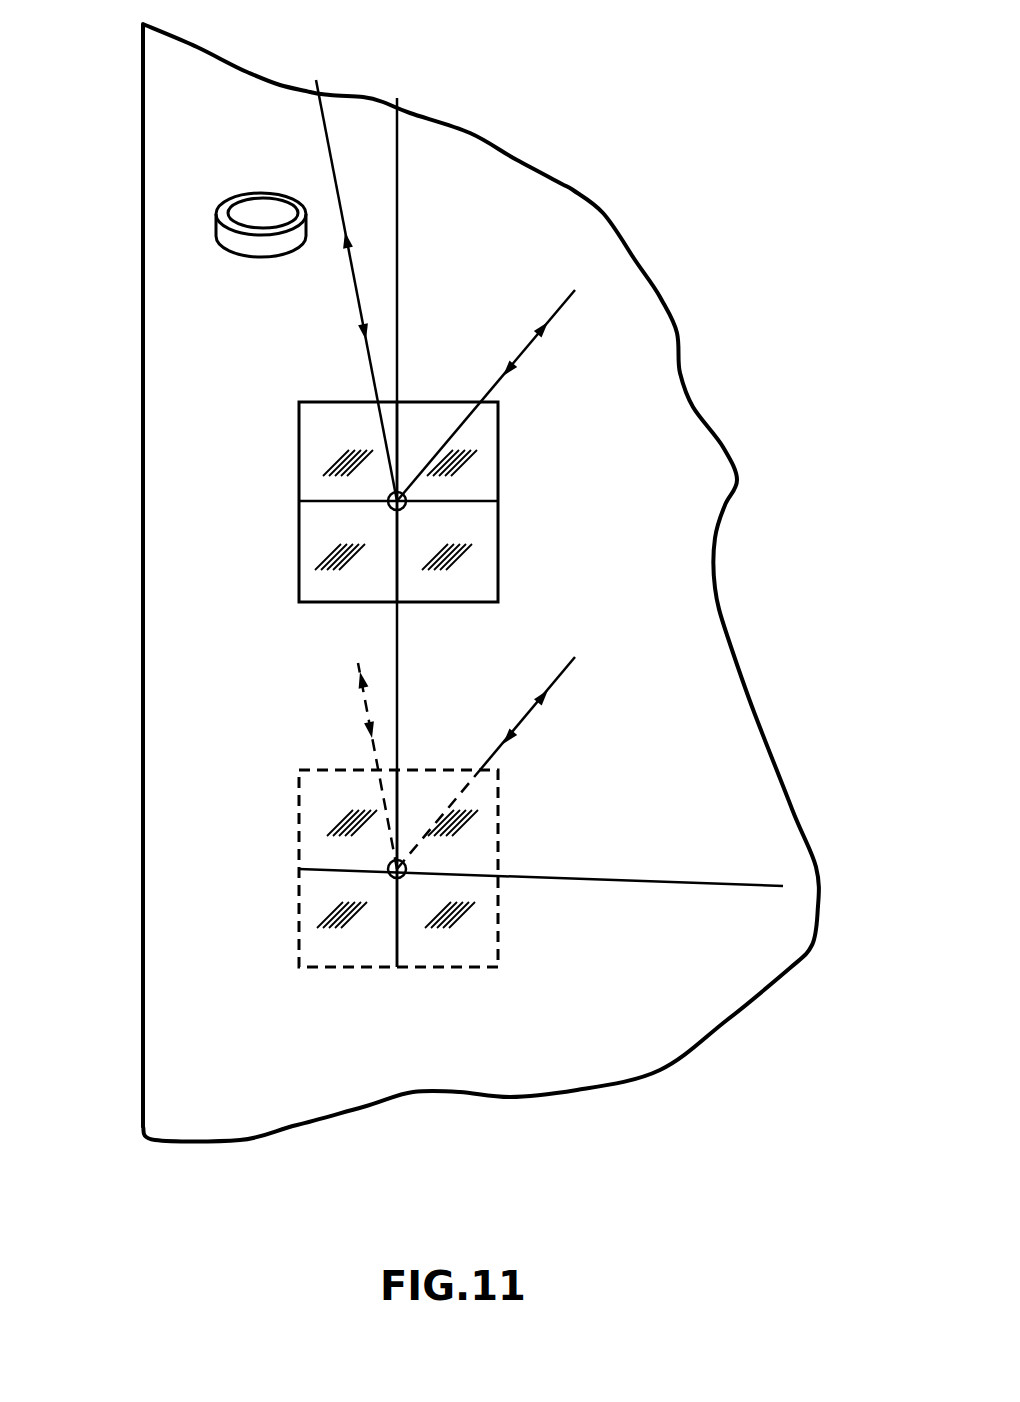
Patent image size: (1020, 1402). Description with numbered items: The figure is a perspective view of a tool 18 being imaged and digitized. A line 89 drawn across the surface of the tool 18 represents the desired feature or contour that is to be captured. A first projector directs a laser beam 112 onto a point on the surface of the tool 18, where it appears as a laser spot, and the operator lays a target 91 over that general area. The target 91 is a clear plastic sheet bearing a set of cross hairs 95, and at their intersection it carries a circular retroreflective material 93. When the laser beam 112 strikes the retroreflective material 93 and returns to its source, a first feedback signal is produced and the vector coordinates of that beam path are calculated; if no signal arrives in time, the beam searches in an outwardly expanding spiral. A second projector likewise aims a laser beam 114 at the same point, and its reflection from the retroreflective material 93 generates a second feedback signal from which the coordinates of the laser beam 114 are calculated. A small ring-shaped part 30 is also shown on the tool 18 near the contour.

The tool 18 is at (142, 850).
The spring washer / ring 30 is at (255, 257).
The line 89 is at (399, 231).
The target 91 is at (297, 576).
The circular retroreflective material 93 is at (405, 506).
The cross hairs 95 is at (400, 415).
The laser beam 112 is at (318, 80).
The laser beam 114 is at (563, 297).